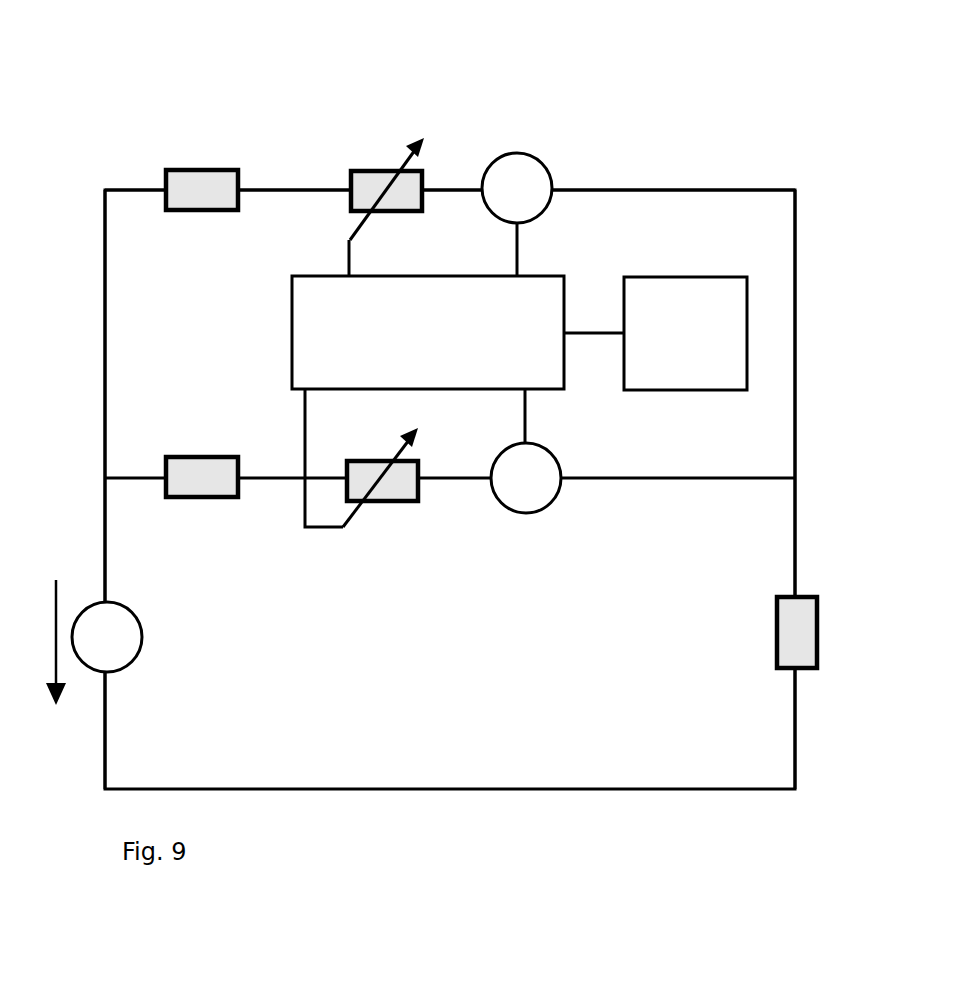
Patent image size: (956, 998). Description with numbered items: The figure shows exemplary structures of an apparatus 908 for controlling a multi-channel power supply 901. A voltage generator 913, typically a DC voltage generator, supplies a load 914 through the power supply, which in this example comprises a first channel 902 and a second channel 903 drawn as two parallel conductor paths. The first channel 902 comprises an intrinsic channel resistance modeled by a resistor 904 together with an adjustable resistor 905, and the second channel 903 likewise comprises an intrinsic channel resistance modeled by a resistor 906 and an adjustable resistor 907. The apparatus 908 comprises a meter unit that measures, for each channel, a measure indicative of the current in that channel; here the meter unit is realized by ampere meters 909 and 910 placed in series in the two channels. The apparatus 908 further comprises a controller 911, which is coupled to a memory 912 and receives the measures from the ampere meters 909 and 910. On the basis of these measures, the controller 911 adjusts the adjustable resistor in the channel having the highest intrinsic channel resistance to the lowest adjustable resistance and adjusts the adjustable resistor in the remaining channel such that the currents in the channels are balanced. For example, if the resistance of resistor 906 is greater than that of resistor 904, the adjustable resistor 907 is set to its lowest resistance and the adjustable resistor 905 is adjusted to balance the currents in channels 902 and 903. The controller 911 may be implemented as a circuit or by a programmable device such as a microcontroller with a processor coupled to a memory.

The multi-channel power supply 901 is at (624, 95).
The first channel 902 is at (768, 188).
The second channel 903 is at (695, 479).
The resistor 904 is at (205, 168).
The adjustable resistor 905 is at (368, 168).
The resistor 906 is at (218, 456).
The adjustable resistor 907 is at (383, 505).
The apparatus 908 is at (236, 335).
The ampere meter 909 is at (512, 152).
The ampere meter 910 is at (507, 512).
The controller 911 is at (517, 293).
The memory 912 is at (637, 292).
The voltage generator 913 is at (143, 645).
The load 914 is at (777, 660).